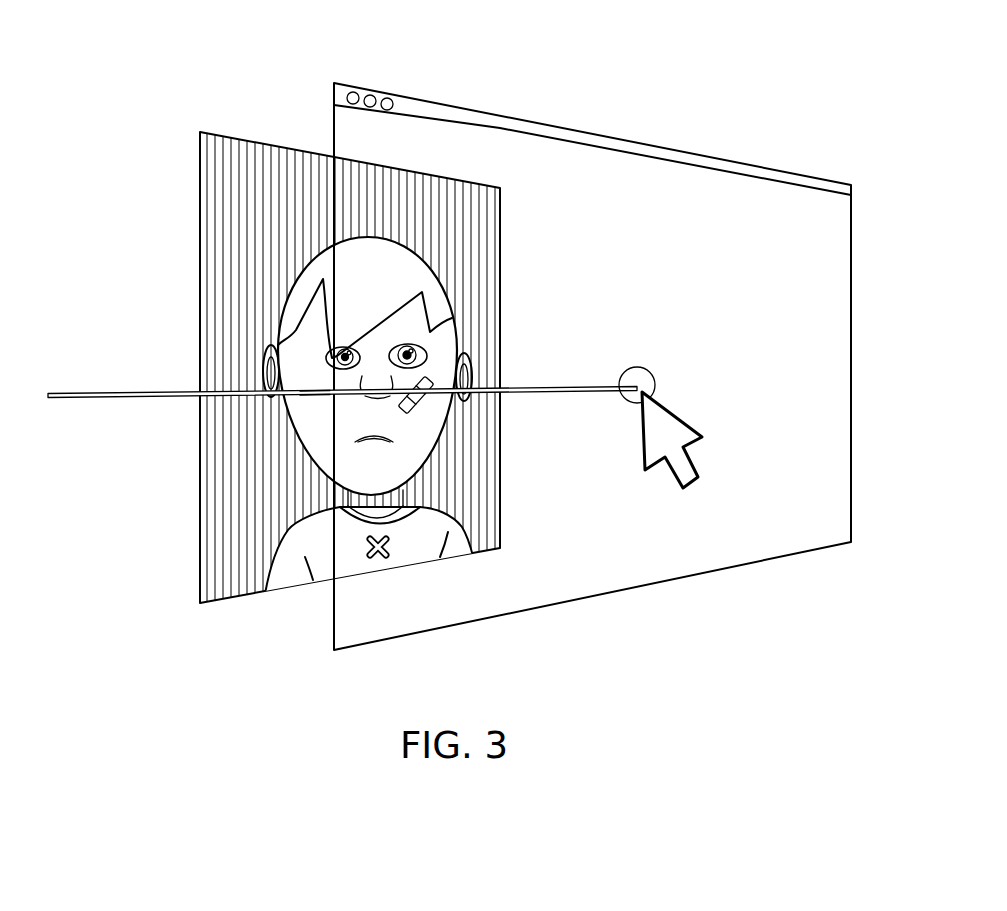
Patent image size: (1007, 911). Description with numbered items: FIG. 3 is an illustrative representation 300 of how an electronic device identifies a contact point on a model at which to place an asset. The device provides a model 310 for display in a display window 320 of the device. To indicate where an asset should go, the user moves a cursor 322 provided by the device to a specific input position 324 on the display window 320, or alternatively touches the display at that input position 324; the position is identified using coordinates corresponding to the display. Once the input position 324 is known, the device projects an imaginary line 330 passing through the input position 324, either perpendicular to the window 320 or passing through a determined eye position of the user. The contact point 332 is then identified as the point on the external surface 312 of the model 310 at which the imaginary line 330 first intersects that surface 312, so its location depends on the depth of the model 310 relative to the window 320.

The display screen window 300 is at (592, 331).
The model 310 is at (218, 143).
The external surface 312 is at (310, 308).
The display window 320 is at (658, 182).
The cursor 322 is at (688, 470).
The input position 324 is at (636, 366).
The imaginary line 330 is at (117, 392).
The contact point 332 is at (323, 390).